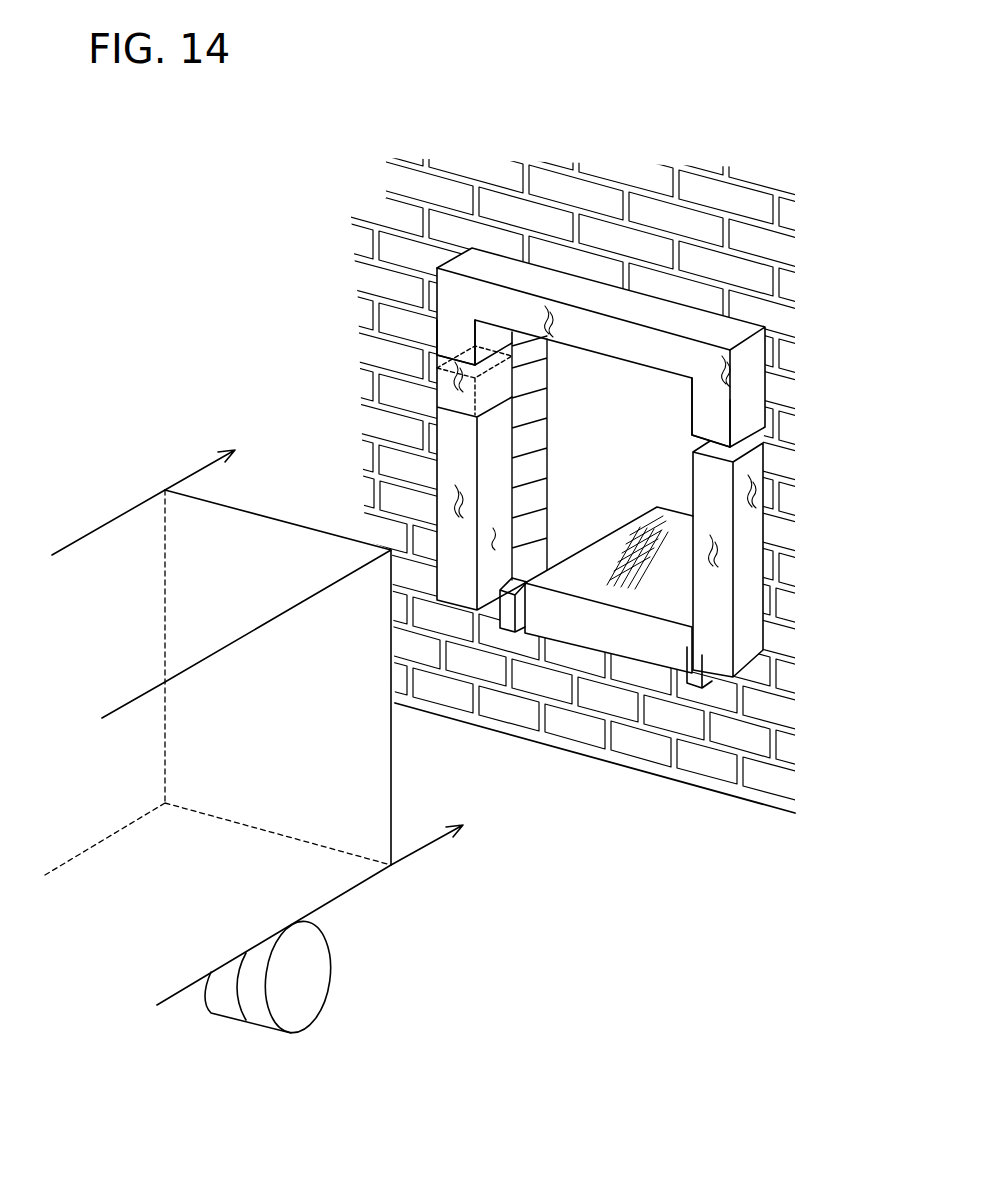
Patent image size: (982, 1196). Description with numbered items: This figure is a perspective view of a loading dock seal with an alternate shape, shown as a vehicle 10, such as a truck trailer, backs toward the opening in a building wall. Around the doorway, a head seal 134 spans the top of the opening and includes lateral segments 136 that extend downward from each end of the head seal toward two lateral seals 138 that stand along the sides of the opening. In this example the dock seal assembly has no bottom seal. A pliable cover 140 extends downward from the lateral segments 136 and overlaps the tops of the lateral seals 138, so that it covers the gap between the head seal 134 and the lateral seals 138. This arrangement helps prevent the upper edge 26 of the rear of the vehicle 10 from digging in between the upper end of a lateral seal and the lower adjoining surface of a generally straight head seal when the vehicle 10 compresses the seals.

The vehicle 10 is at (87, 532).
The upper edge 26 is at (225, 502).
The head seal 134 is at (515, 275).
The lateral segments 136 is at (457, 333).
The lateral seals 138 is at (455, 457).
The pliable cover 140 is at (455, 430).